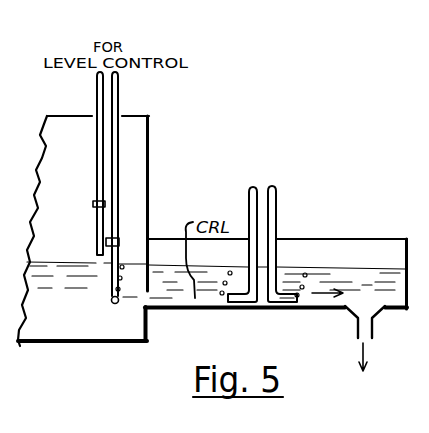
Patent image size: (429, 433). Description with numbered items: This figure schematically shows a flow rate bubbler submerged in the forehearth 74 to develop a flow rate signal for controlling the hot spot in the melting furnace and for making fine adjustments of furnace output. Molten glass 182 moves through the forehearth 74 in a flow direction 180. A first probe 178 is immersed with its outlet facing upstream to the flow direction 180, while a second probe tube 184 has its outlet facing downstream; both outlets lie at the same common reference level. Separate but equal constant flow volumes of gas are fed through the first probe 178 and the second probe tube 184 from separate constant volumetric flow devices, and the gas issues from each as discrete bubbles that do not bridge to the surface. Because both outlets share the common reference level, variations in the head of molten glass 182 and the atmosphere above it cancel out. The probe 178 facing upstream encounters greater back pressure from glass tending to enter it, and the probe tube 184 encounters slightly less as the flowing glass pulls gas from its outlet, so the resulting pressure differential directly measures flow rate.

The forehearth 74 is at (333, 238).
The first probe 178 is at (251, 190).
The second probe tube 184 is at (274, 190).
The flow direction 180 is at (320, 296).
The molten glass 182 is at (367, 273).